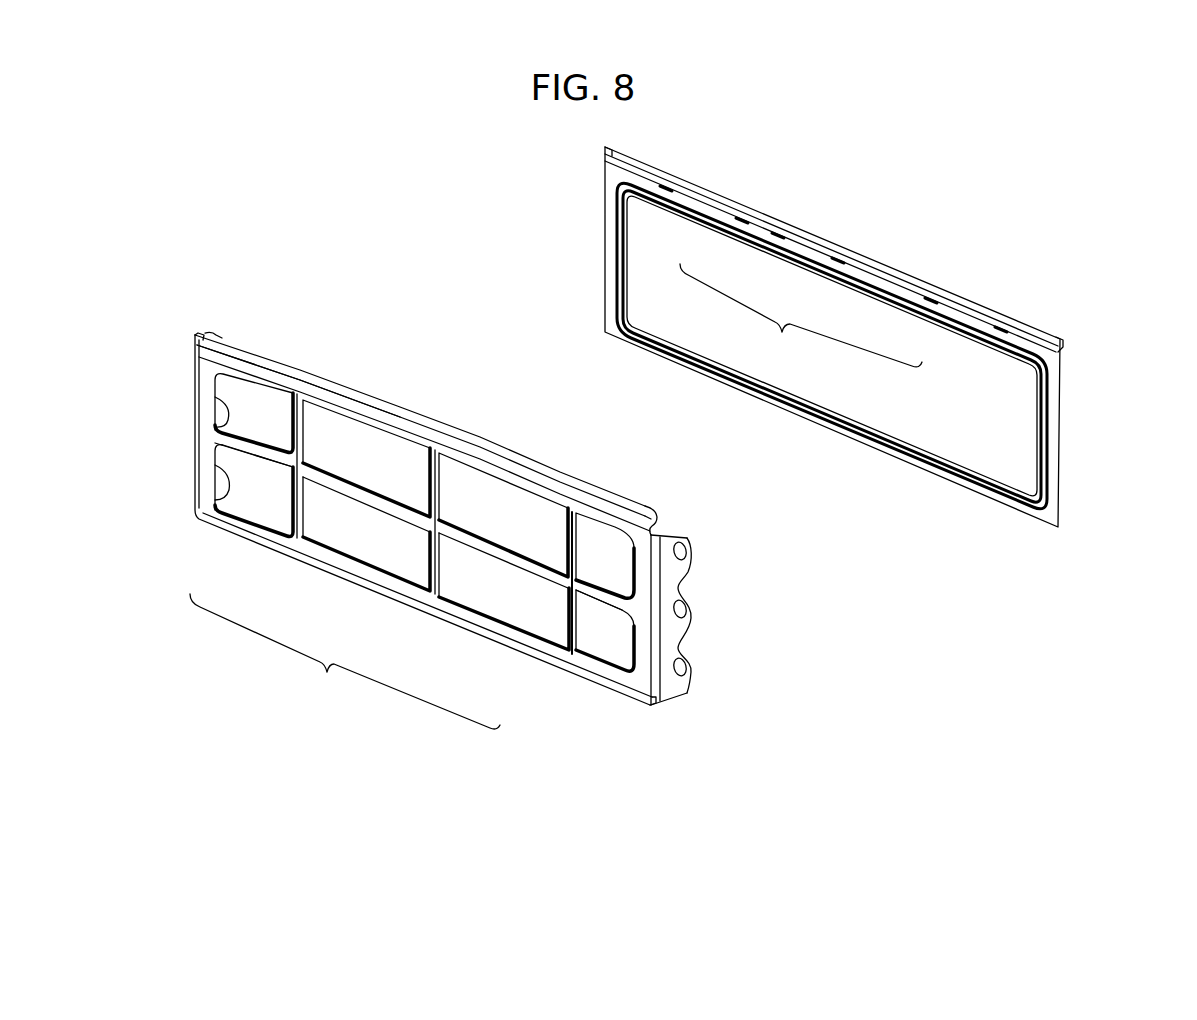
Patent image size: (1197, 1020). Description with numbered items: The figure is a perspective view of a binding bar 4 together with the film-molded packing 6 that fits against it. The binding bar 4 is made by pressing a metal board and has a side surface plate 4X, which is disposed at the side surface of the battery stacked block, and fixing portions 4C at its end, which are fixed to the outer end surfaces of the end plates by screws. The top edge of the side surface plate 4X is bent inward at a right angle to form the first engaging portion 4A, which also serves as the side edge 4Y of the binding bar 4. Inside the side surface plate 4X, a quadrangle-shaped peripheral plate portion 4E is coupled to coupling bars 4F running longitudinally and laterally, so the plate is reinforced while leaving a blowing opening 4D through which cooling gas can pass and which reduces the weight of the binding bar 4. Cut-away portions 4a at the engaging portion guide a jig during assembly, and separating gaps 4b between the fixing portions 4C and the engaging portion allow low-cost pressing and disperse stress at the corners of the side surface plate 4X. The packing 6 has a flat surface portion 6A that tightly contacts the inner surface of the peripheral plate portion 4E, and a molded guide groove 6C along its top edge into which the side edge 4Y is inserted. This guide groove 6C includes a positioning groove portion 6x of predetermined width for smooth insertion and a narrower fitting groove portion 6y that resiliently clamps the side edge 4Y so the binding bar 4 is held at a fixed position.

The binding bar 4 is at (352, 328).
The cut-away portions 4a is at (227, 332).
The separating gaps 4b is at (658, 527).
The first engaging portion 4A is at (437, 420).
The side edge 4Y is at (298, 381).
The fixing portions 4C is at (670, 597).
The blowing opening 4D is at (352, 435).
The peripheral plate portion 4E is at (240, 482).
The coupling bars 4F is at (345, 490).
The side surface plate 4X is at (345, 661).
The cover 6 is at (923, 233).
The flat surface portion 6A is at (612, 265).
The guide groove 6C is at (801, 316).
The positioning groove portion 6x is at (741, 226).
The fitting groove portion 6y is at (776, 237).